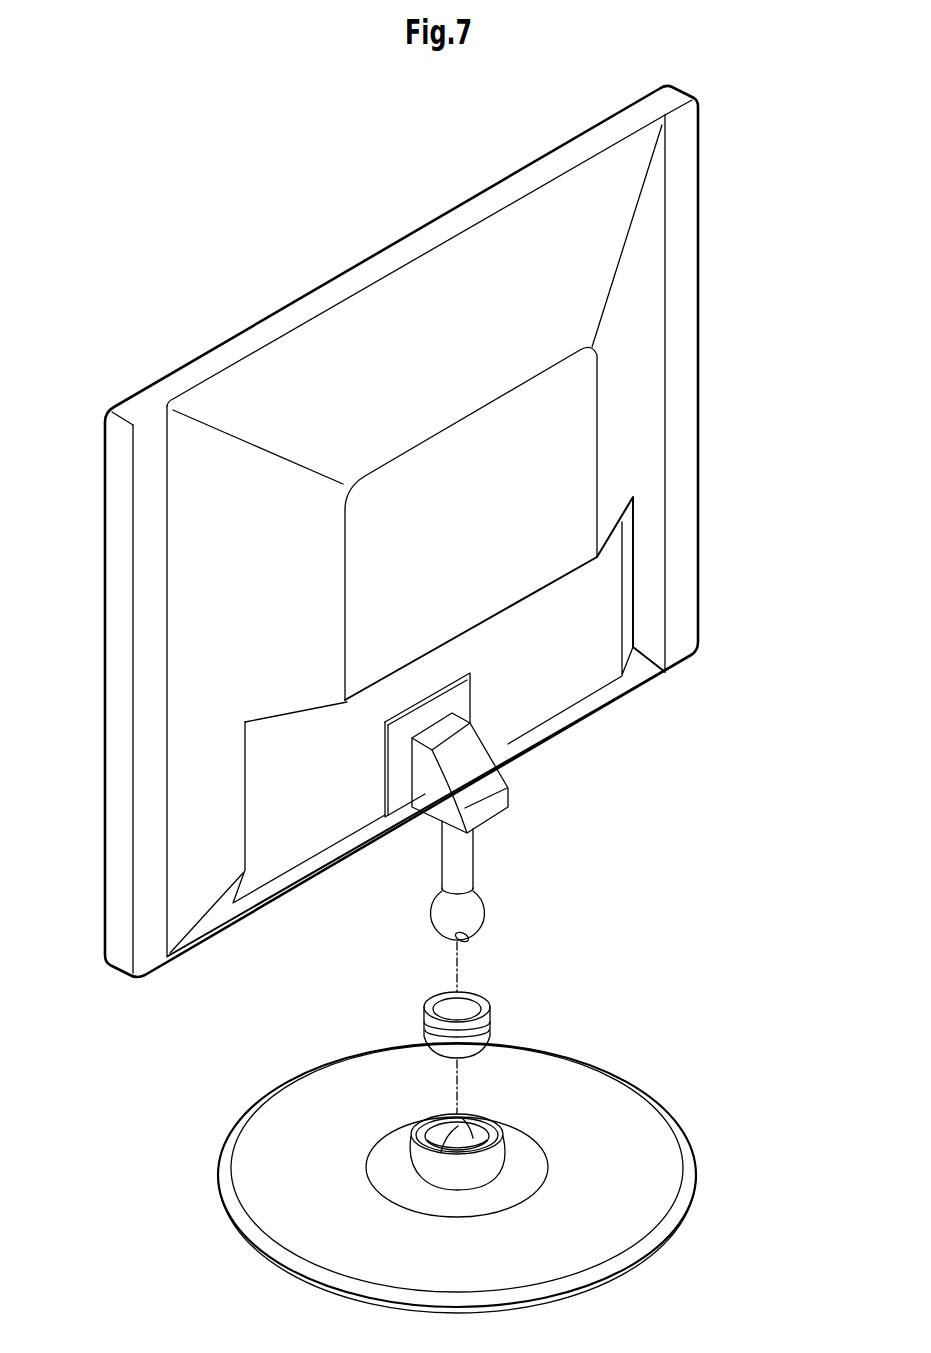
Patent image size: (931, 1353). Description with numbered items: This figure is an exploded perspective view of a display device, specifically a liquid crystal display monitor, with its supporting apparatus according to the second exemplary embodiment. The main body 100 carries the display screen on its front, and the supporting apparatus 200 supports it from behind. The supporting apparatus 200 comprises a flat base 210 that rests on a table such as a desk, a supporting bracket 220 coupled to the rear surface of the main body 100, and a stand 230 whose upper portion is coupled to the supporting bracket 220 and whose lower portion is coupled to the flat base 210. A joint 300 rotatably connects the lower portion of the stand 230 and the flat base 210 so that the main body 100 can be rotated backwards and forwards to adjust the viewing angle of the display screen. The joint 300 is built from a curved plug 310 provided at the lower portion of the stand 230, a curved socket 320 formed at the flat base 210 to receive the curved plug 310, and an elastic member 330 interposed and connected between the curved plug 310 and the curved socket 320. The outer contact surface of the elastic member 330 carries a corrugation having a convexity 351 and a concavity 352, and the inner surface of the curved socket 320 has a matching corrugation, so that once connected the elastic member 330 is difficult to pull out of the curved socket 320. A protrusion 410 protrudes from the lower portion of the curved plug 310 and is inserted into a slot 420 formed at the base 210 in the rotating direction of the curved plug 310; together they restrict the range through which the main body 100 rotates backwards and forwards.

The main body 100 is at (642, 392).
The supporting apparatus 200 is at (660, 1092).
The flat base 210 is at (650, 1162).
The supporting bracket 220 is at (480, 773).
The stand 230 is at (470, 852).
The joint 300 is at (572, 965).
The curved plug 310 is at (472, 913).
The curved socket 320 is at (468, 1117).
The elastic member 330 is at (493, 1035).
The convexity 351 is at (425, 1023).
The concavity 352 is at (440, 1117).
The protrusion 410 is at (453, 938).
The slot 420 is at (462, 1117).